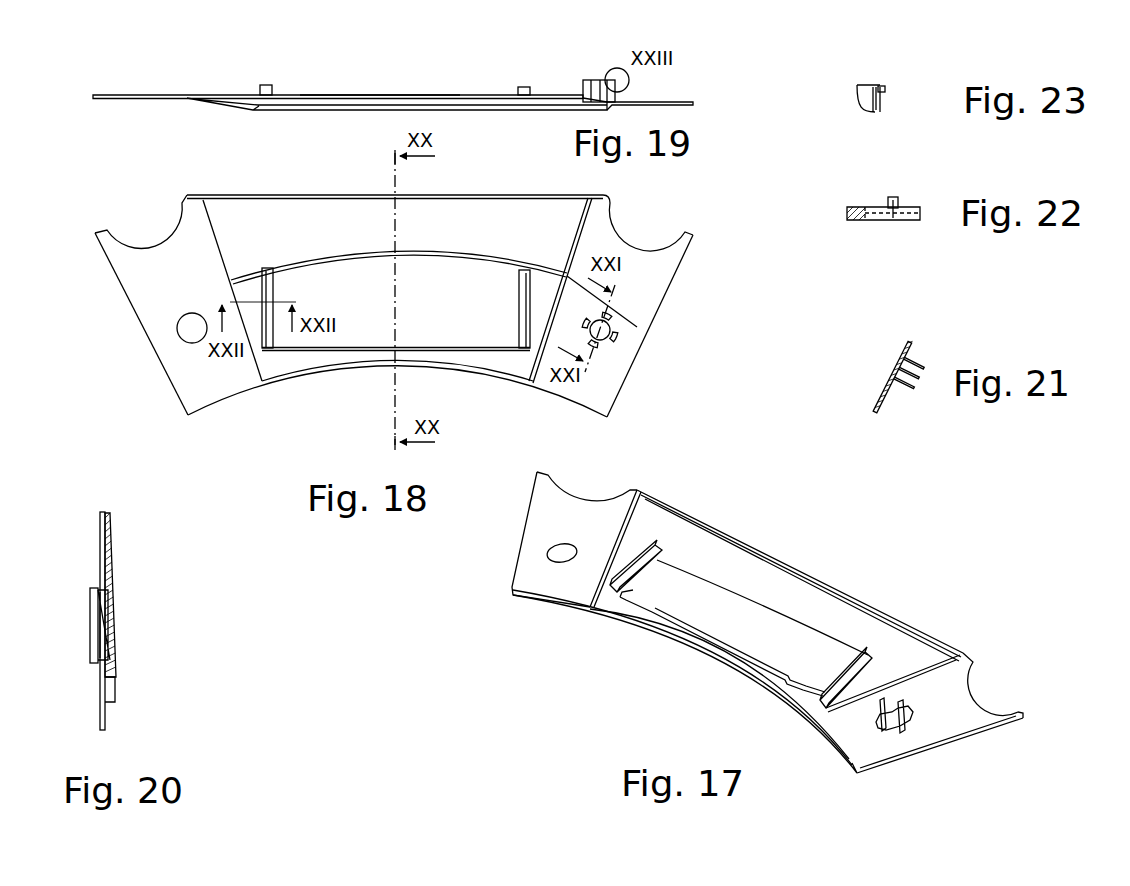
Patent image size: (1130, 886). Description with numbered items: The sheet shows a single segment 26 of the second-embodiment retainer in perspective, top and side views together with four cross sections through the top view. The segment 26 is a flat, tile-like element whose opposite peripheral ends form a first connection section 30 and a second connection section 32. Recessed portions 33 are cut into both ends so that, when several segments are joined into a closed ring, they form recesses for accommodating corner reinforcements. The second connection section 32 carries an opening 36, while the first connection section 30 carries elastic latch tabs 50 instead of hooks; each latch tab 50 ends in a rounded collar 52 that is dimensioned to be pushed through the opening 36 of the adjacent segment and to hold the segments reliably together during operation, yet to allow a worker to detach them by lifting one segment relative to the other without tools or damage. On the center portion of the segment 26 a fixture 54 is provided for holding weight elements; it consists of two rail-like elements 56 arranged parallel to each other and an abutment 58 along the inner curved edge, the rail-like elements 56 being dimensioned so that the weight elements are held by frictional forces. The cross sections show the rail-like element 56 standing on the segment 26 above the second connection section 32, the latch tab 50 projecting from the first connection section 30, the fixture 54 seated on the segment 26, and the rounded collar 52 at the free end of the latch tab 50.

In FIG. 18, the segment 26 is at (462, 222).
In FIG. 17, the segment 26 is at (682, 538).
In FIG. 20, the segment 26 is at (110, 543).
In FIG. 22, the segment 26 is at (918, 218).
In FIG. 19, the first connection section 30 is at (660, 100).
In FIG. 18, the first connection section 30 is at (613, 367).
In FIG. 17, the first connection section 30 is at (973, 713).
In FIG. 21, the first connection section 30 is at (878, 402).
In FIG. 19, the second connection section 32 is at (115, 98).
In FIG. 18, the second connection section 32 is at (214, 388).
In FIG. 17, the second connection section 32 is at (555, 587).
In FIG. 20, the second connection section 32 is at (107, 720).
In FIG. 18, the recessed portion 33 is at (131, 240).
In FIG. 17, the recessed portion 33 is at (580, 493).
In FIG. 18, the opening 36 is at (180, 326).
In FIG. 17, the opening 36 is at (548, 550).
In FIG. 19, the elastic latch tab 50 is at (581, 90).
In FIG. 18, the elastic latch tab 50 is at (600, 330).
In FIG. 17, the elastic latch tab 50 is at (913, 720).
In FIG. 21, the elastic latch tab 50 is at (915, 397).
In FIG. 23, the elastic latch tab 50 is at (885, 98).
In FIG. 23, the rounded collar 52 is at (892, 80).
In FIG. 19, the fixture 54 is at (267, 88).
In FIG. 18, the fixture 54 is at (448, 328).
In FIG. 17, the fixture 54 is at (752, 617).
In FIG. 22, the fixture 54 is at (888, 198).
In FIG. 19, the rail-like element 56 is at (327, 94).
In FIG. 18, the rail-like element 56 is at (277, 278).
In FIG. 17, the rail-like element 56 is at (660, 583).
In FIG. 20, the rail-like element 56 is at (100, 620).
In FIG. 18, the abutment 58 is at (355, 352).
In FIG. 17, the abutment 58 is at (703, 637).